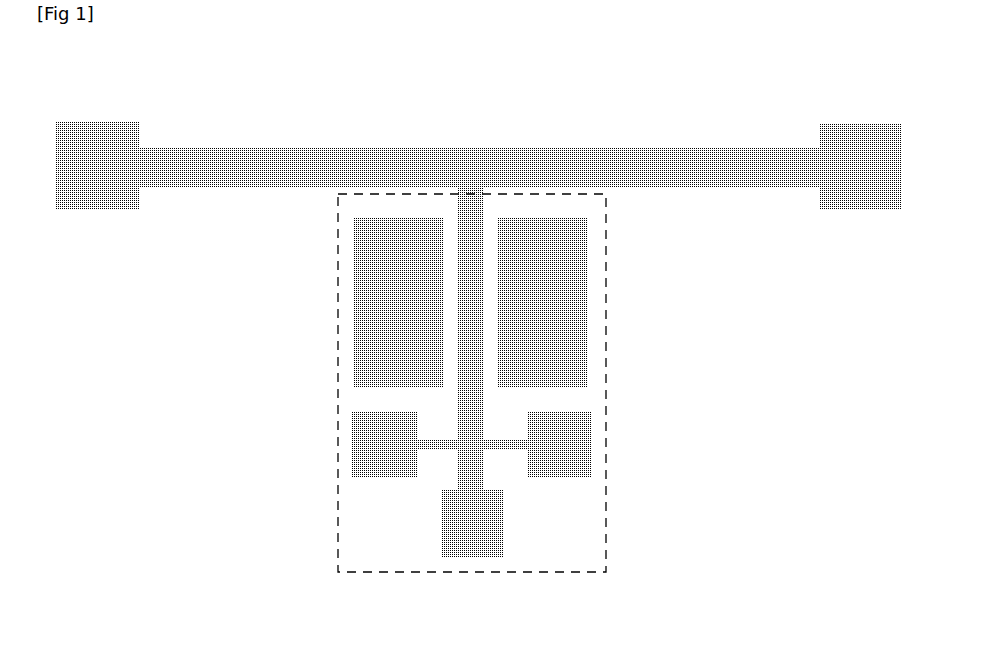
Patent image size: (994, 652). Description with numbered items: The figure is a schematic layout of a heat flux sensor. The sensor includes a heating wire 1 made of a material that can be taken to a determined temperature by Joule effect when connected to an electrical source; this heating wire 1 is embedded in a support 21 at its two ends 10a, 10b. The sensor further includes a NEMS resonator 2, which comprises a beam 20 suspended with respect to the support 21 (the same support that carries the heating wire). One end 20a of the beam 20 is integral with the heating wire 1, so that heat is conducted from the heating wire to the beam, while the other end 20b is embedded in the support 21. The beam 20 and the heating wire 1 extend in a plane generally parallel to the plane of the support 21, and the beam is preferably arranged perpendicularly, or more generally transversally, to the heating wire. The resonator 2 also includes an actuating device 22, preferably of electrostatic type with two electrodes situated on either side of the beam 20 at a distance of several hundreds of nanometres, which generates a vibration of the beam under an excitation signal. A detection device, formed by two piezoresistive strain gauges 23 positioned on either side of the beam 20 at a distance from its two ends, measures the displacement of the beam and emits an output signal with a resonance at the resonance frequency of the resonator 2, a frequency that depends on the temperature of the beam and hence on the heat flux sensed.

The heating wire 1 is at (465, 148).
The first end of heating wire 10a is at (160, 130).
The second end of heating wire 10b is at (798, 130).
The NEMS resonator 2 is at (618, 383).
The beam 20 is at (457, 463).
The first end of beam 20a is at (504, 200).
The second end of beam 20b is at (506, 482).
The support 21 is at (112, 184).
The actuating device 22 is at (363, 332).
The piezoresistive strain gauges 23 is at (510, 440).